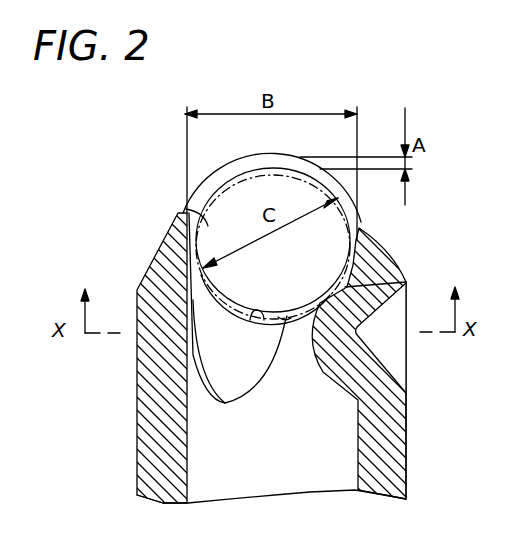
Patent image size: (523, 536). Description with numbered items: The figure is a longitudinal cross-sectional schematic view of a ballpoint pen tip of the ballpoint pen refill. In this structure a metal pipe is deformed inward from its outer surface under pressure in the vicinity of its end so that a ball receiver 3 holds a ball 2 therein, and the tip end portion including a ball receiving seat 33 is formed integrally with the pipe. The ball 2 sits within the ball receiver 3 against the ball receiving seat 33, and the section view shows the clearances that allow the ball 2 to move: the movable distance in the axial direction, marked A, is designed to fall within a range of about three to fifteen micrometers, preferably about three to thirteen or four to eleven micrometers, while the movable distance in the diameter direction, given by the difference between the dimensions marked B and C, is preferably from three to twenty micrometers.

The ball 2 is at (180, 213).
The ball receiver 3 is at (378, 244).
The ball receiving seat 33 is at (216, 363).